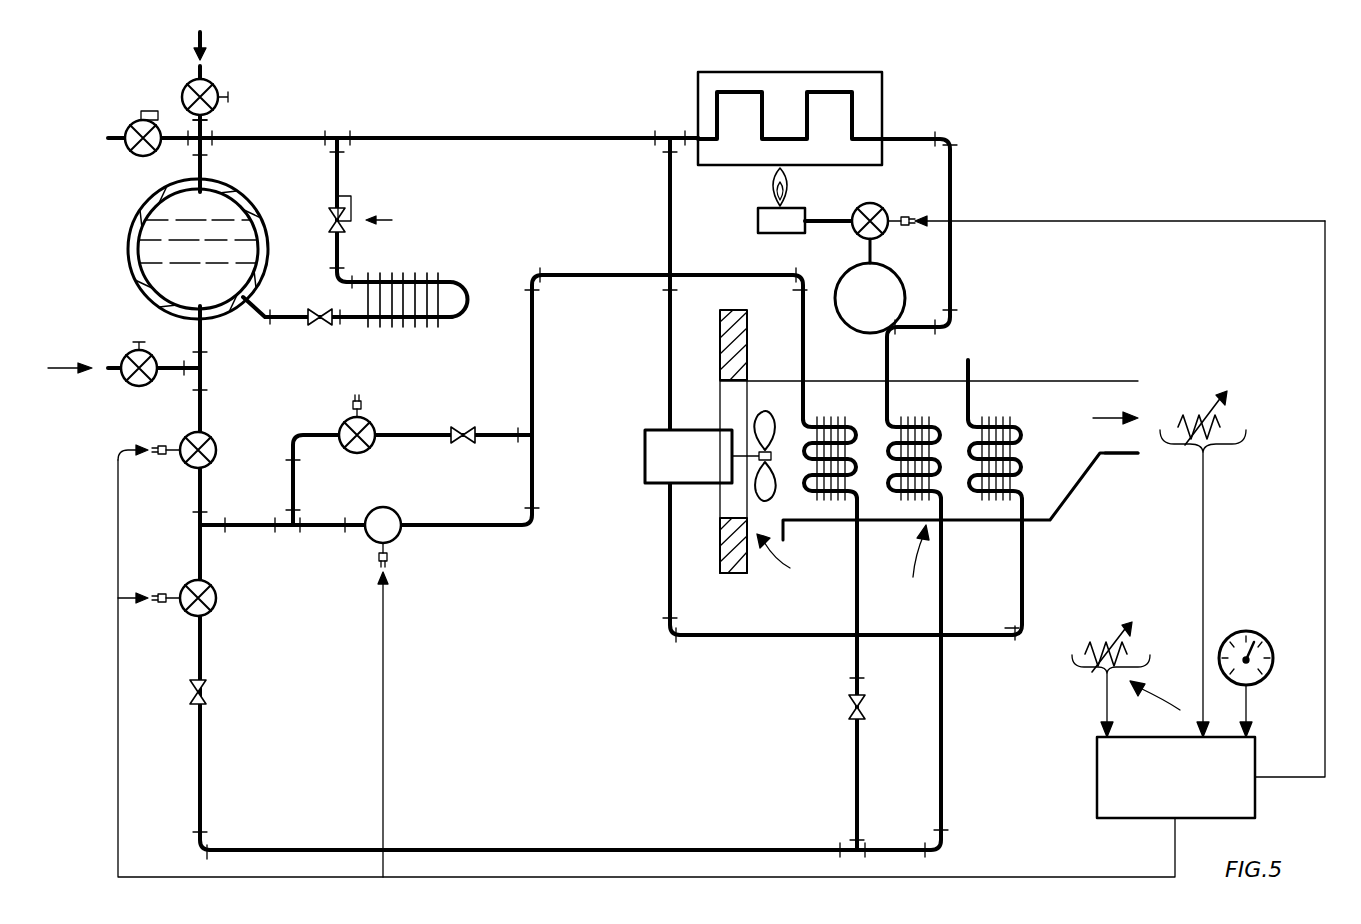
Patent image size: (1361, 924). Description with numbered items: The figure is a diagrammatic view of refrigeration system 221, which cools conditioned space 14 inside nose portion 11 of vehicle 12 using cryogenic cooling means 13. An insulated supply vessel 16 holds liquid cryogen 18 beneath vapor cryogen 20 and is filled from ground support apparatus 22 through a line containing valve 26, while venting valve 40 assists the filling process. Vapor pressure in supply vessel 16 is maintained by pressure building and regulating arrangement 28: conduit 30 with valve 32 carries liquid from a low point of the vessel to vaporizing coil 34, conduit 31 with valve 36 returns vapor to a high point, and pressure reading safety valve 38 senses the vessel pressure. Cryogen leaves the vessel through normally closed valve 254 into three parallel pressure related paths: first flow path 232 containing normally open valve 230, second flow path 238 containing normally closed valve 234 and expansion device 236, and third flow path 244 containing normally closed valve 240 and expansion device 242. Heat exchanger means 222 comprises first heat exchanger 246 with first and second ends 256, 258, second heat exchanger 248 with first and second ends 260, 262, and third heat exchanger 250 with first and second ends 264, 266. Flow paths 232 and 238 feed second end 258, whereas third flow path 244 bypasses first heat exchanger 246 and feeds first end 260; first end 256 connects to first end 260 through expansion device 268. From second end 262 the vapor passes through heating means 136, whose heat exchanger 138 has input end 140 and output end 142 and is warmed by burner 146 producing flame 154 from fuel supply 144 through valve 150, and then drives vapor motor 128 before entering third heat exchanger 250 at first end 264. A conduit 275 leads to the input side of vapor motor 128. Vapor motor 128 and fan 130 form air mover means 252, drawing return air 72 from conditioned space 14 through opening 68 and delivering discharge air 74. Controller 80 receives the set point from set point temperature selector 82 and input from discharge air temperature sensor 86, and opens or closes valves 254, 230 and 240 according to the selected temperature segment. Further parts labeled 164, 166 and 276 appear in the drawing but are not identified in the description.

The nose portion 11 is at (730, 575).
The vehicle 12 is at (703, 591).
The cryogenic cooling means 13 is at (311, 171).
The conditioned space 14 is at (1122, 503).
The supply vessel 16 is at (128, 258).
The liquid cryogen 18 is at (228, 215).
The vapor cryogen 20 is at (178, 205).
The ground support apparatus 22 is at (60, 368).
The valve 26 is at (125, 355).
The pressure building and regulating arrangement 28 is at (421, 250).
The conduit 30 is at (255, 305).
The conduit 31 is at (237, 138).
The valve 32 is at (314, 326).
The vaporizing coil 34 is at (432, 328).
The valve 36 is at (330, 228).
The pressure reading safety valve 38 is at (130, 125).
The venting valve 40 is at (215, 85).
The opening 68 is at (720, 541).
The return air 72 is at (768, 565).
The discharge air 74 is at (1104, 418).
The controller 80 is at (1097, 755).
The set point temperature selector 82 is at (1273, 662).
The discharge air temperature sensor 86 is at (1225, 420).
The vapor motor 128 is at (690, 428).
The fan 130 is at (768, 415).
The heating means 136 is at (786, 268).
The heat exchanger 138 is at (773, 110).
The input end 140 is at (918, 139).
The output end 142 is at (692, 148).
The fuel supply 144 is at (840, 278).
The burner 146 is at (758, 222).
The valve 150 is at (882, 208).
The flame 154 is at (792, 186).
The return pipe / sensor 164 is at (1085, 646).
The pipe 166 is at (337, 138).
The refrigeration system 221 is at (563, 100).
The heat exchanger means 222 is at (931, 608).
The normally open valve 230 is at (396, 515).
The first flow path 232 is at (470, 530).
The normally closed valve 234 is at (371, 424).
The expansion device 236 is at (468, 428).
The second flow path 238 is at (418, 448).
The normally closed valve 240 is at (211, 585).
The expansion device 242 is at (202, 688).
The third flow path 244 is at (278, 838).
The first heat exchanger 246 is at (860, 432).
The second heat exchanger 248 is at (893, 495).
The third heat exchanger 250 is at (1030, 472).
The air mover means 252 is at (712, 518).
The normally closed valve 254 is at (211, 437).
The first end 256 is at (855, 522).
The second end 258 is at (806, 372).
The first end 260 is at (944, 525).
The second end 262 is at (890, 374).
The first end 264 is at (1030, 528).
The second end 266 is at (972, 375).
The expansion device 268 is at (862, 700).
The conduit 275 is at (534, 140).
The pipe 276 is at (660, 150).